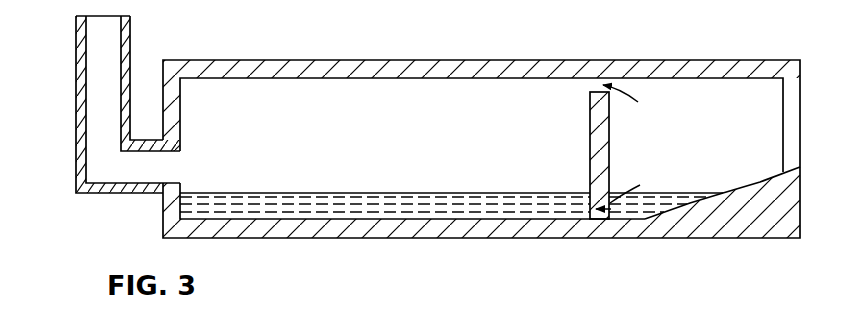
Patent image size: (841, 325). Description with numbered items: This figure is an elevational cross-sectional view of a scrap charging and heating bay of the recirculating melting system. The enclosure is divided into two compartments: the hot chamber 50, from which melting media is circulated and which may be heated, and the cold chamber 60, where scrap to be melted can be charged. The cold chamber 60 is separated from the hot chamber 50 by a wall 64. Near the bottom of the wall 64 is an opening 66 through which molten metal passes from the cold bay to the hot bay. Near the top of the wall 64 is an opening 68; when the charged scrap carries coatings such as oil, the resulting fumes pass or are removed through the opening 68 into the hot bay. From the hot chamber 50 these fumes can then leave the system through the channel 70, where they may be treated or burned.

The hot chamber 50 is at (383, 147).
The cold chamber 60 is at (683, 149).
The wall 64 is at (590, 147).
The opening 66 is at (599, 213).
The opening 68 is at (588, 82).
The channel 70 is at (76, 97).